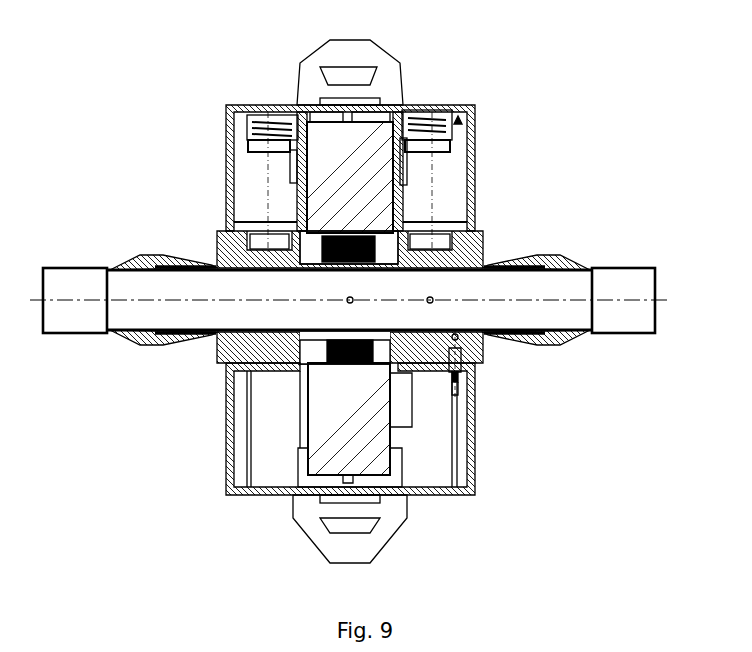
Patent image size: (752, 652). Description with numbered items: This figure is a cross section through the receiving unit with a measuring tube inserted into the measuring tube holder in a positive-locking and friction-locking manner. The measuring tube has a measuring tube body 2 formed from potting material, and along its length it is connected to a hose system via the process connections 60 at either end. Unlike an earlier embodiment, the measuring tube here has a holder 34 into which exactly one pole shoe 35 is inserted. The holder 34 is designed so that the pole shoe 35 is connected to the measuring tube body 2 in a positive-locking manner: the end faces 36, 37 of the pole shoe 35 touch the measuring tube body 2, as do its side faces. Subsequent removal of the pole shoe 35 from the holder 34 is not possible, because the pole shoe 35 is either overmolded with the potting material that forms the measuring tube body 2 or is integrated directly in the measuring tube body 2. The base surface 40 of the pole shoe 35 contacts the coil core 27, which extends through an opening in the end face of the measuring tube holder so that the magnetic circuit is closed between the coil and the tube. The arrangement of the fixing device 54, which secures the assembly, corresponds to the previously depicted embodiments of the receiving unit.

The measuring tube body 2 is at (455, 257).
The coil core 27 is at (372, 183).
The holder 34 is at (263, 223).
The pole shoe 35 is at (258, 138).
The end face 36 is at (413, 222).
The end face 37 is at (330, 232).
The base surface 40 is at (325, 236).
The fixing device 54 is at (462, 118).
The process connections 60 is at (548, 338).